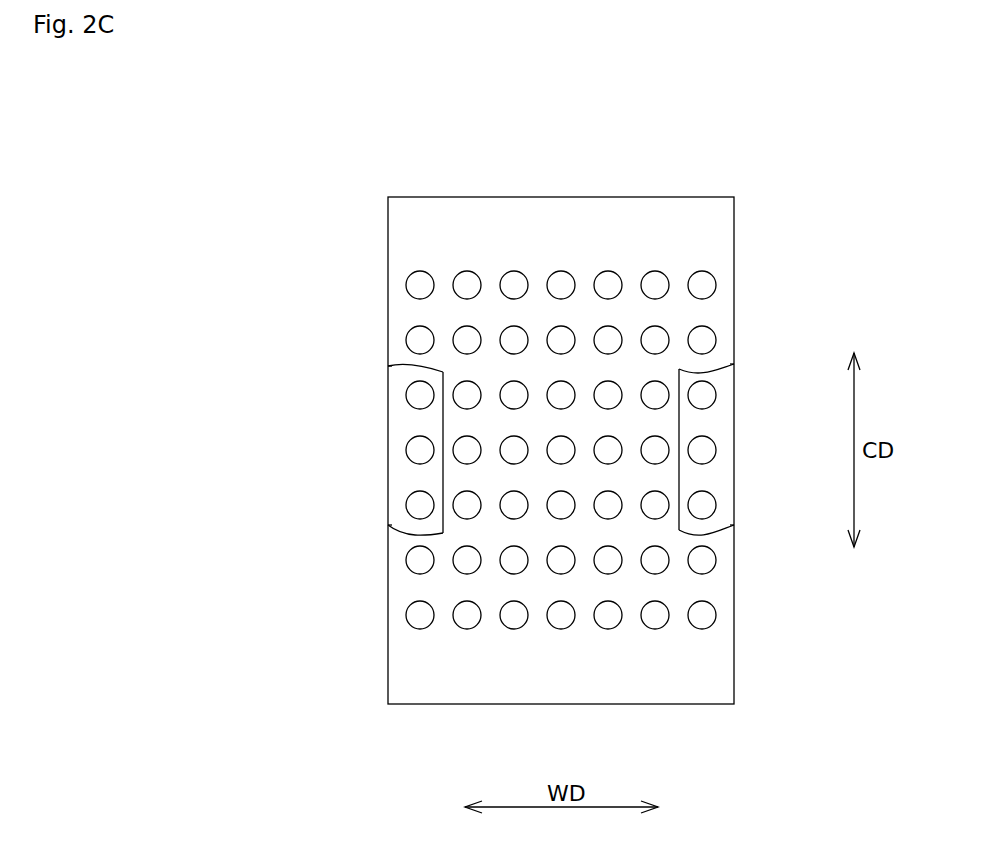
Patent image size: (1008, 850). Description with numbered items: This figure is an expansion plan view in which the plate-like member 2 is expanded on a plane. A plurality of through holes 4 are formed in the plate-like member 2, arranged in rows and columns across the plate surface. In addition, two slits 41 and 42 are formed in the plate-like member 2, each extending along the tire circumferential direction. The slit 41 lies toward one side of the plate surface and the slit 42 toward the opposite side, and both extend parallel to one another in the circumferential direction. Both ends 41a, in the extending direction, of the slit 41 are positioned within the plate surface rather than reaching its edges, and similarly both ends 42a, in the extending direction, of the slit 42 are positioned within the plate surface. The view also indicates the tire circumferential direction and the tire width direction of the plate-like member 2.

The plate-like member 2 is at (366, 237).
The through holes 4 is at (707, 343).
The slit 41 is at (443, 430).
The ends of the slit 41a is at (388, 366).
The slit 42 is at (679, 430).
The ends of the slit 42a is at (734, 364).